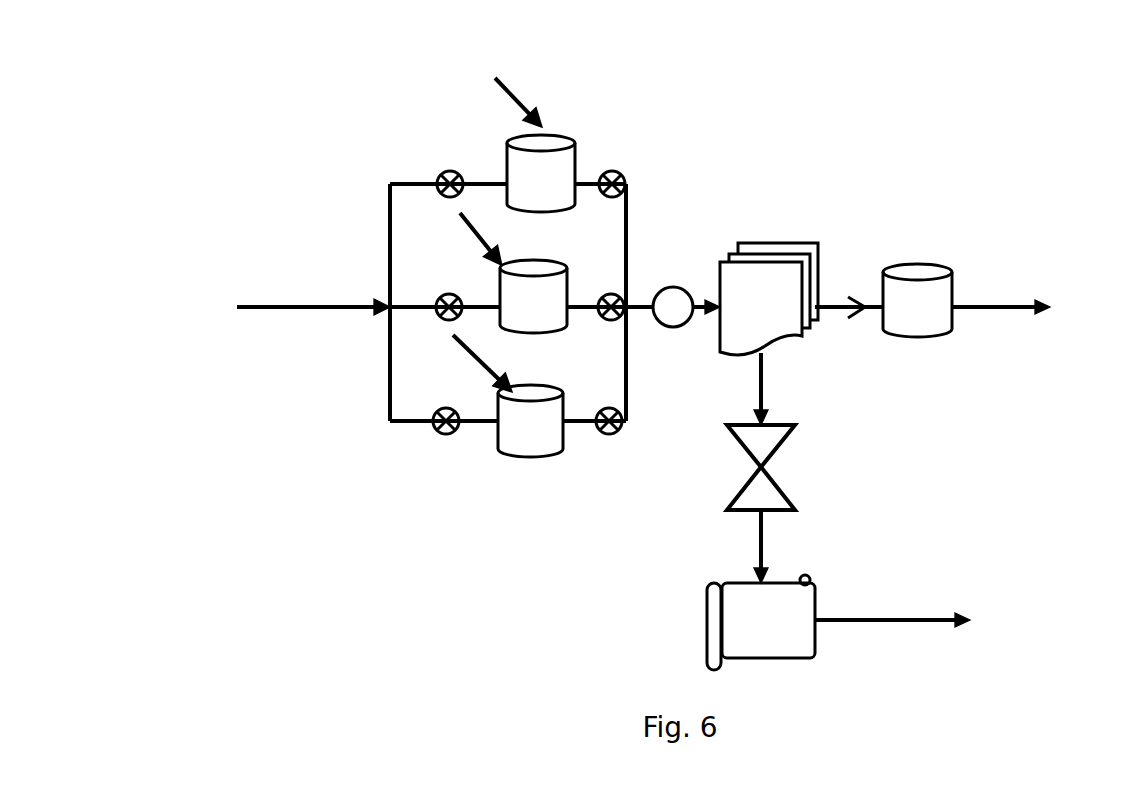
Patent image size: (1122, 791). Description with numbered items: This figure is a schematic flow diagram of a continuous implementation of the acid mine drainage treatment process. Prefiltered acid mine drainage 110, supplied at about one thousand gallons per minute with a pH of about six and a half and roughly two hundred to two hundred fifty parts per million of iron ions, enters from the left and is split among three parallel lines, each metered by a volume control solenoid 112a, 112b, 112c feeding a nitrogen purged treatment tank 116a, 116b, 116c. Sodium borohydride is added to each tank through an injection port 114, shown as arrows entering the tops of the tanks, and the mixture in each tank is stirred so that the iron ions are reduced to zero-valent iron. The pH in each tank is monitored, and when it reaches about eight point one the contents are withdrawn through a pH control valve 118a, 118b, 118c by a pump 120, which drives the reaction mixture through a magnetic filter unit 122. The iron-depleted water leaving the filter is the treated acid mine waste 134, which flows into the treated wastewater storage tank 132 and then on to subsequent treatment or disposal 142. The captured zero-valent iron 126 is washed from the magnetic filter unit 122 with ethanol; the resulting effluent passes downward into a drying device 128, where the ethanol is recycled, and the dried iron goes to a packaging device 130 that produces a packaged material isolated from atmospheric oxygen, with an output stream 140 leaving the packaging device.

The prefiltered acid mine drainage 110 is at (320, 286).
The volume control solenoid 112a is at (440, 171).
The volume control solenoid 112b is at (417, 318).
The volume control solenoid 112c is at (415, 437).
The injection port 114 is at (523, 105).
The treatment tank 116a is at (541, 173).
The treatment tank 116b is at (533, 296).
The treatment tank 116c is at (530, 421).
The pH control valve 118a is at (603, 170).
The pH control valve 118b is at (613, 294).
The pH control valve 118c is at (608, 437).
The pump 120 is at (658, 330).
The magnetic filter unit 122 is at (769, 299).
The zero-valent iron 126 is at (767, 388).
The drying device 128 is at (762, 443).
The packaging device 130 is at (761, 622).
The treated wastewater storage tank 132 is at (917, 300).
The treated acid mine waste 134 is at (867, 320).
The waste stream 140 is at (900, 620).
The subsequent treatment or disposal 142 is at (993, 312).